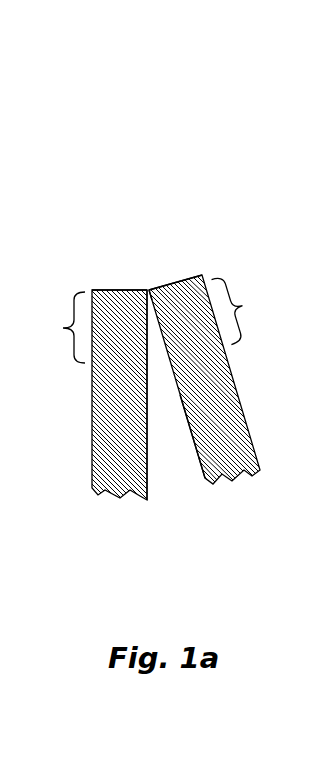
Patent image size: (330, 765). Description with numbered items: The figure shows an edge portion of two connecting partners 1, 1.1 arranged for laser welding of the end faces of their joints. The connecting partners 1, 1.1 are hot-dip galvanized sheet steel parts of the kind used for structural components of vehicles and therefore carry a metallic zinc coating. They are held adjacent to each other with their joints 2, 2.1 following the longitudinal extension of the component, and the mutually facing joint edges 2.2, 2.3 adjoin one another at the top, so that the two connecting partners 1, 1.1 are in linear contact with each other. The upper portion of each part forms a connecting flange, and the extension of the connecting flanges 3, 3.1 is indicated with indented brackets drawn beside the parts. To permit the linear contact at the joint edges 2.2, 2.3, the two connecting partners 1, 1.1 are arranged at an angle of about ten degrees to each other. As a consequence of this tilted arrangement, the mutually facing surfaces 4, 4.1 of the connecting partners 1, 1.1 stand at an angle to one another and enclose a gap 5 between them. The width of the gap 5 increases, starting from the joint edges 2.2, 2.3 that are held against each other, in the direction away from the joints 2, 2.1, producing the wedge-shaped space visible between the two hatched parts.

The connecting partner 1 is at (244, 399).
The connecting partner 1.1 is at (88, 410).
The joint 2 is at (195, 275).
The joint 2.1 is at (99, 286).
The joint edge 2.2 is at (146, 287).
The joint edge 2.3 is at (149, 287).
The connecting flange 3 is at (236, 308).
The connecting flange 3.1 is at (58, 327).
The mutually facing surface 4 is at (193, 446).
The mutually facing surface 4.1 is at (148, 465).
The gap 5 is at (175, 430).